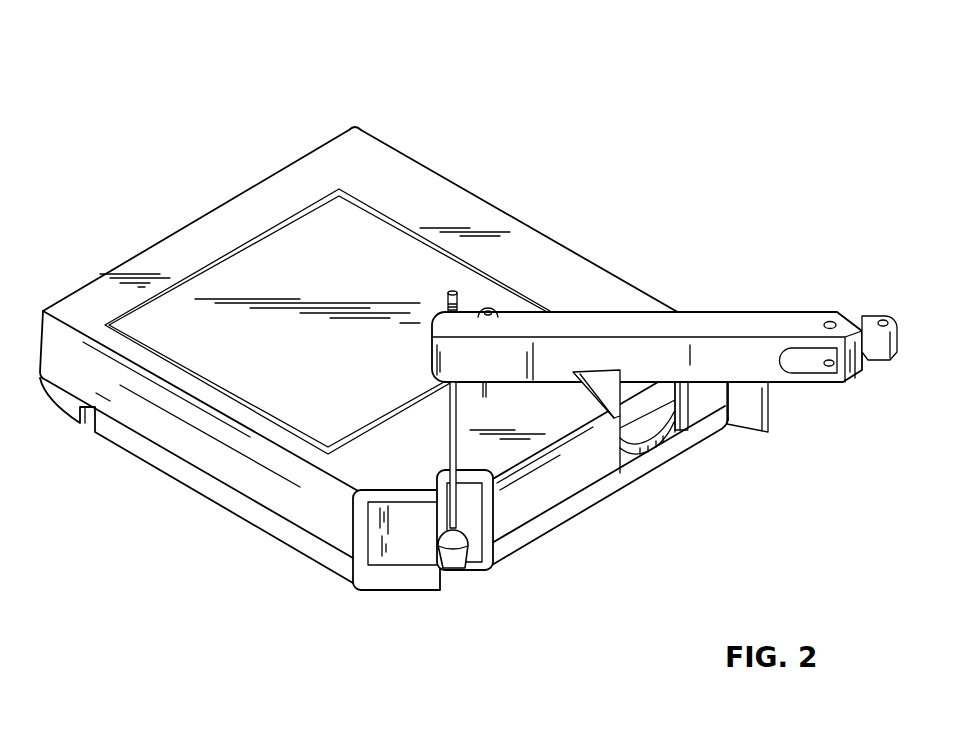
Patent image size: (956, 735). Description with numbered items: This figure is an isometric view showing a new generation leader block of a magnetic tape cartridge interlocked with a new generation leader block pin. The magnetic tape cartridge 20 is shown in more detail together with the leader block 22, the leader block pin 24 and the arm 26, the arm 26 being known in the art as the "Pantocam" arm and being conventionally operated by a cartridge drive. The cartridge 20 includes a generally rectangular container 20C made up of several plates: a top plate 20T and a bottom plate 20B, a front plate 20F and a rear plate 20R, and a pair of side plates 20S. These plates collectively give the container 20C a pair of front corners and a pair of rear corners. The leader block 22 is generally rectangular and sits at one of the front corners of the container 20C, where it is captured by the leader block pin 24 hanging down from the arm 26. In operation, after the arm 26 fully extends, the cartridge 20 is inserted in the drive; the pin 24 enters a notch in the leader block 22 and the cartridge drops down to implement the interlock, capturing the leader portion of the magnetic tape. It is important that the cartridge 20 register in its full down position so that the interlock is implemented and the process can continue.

The magnetic tape cartridge 20 is at (384, 308).
The rear plate 20R is at (310, 153).
The top plate 20T is at (247, 265).
The container 20C is at (387, 242).
The side plates 20S is at (543, 232).
The bottom plate 20B is at (273, 537).
The front plate 20F is at (572, 485).
The leader block 22 is at (398, 557).
The leader block pin 24 is at (462, 570).
The arm 26 is at (750, 312).